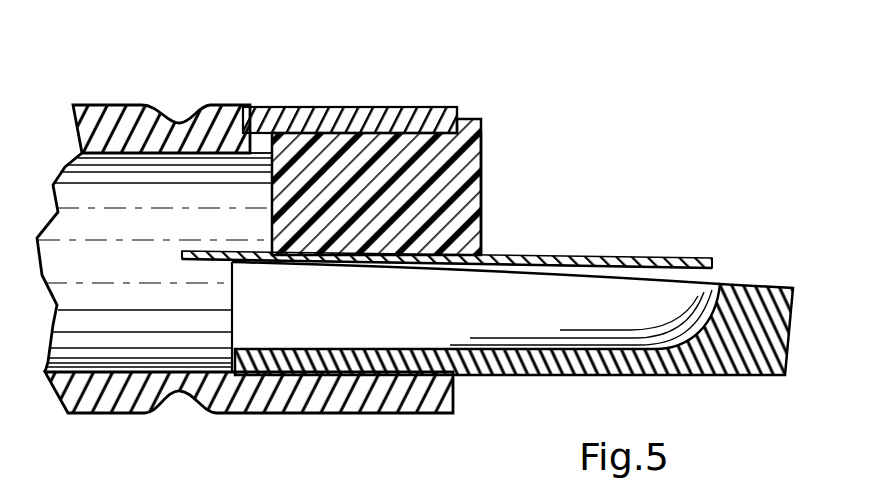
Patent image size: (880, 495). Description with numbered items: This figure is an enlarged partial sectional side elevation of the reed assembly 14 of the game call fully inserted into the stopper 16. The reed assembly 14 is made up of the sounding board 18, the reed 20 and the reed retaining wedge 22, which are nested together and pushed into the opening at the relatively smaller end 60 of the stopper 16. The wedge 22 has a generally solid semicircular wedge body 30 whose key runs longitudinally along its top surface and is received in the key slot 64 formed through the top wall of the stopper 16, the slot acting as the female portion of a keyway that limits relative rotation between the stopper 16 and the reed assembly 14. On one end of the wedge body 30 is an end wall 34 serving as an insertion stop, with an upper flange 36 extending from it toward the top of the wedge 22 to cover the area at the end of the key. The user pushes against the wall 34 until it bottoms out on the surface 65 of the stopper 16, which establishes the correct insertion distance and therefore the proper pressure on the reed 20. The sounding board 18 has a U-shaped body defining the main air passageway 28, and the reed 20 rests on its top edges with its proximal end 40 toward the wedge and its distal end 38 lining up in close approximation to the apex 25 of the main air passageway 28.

The reed assembly section 14 is at (207, 360).
The stopper 16 is at (318, 99).
The sounding board 18 is at (752, 280).
The reed 20 is at (617, 250).
The wedge 22 is at (492, 170).
The apex 25 is at (705, 295).
The main air passageway 28 is at (395, 313).
The wedge body 30 is at (338, 266).
The end wall 34 is at (472, 200).
The upper flange 36 is at (486, 127).
The distal end 38 is at (711, 265).
The proximal end 40 is at (185, 254).
The small end 60 is at (437, 420).
The key slot 64 is at (257, 140).
The surface 65 is at (456, 120).